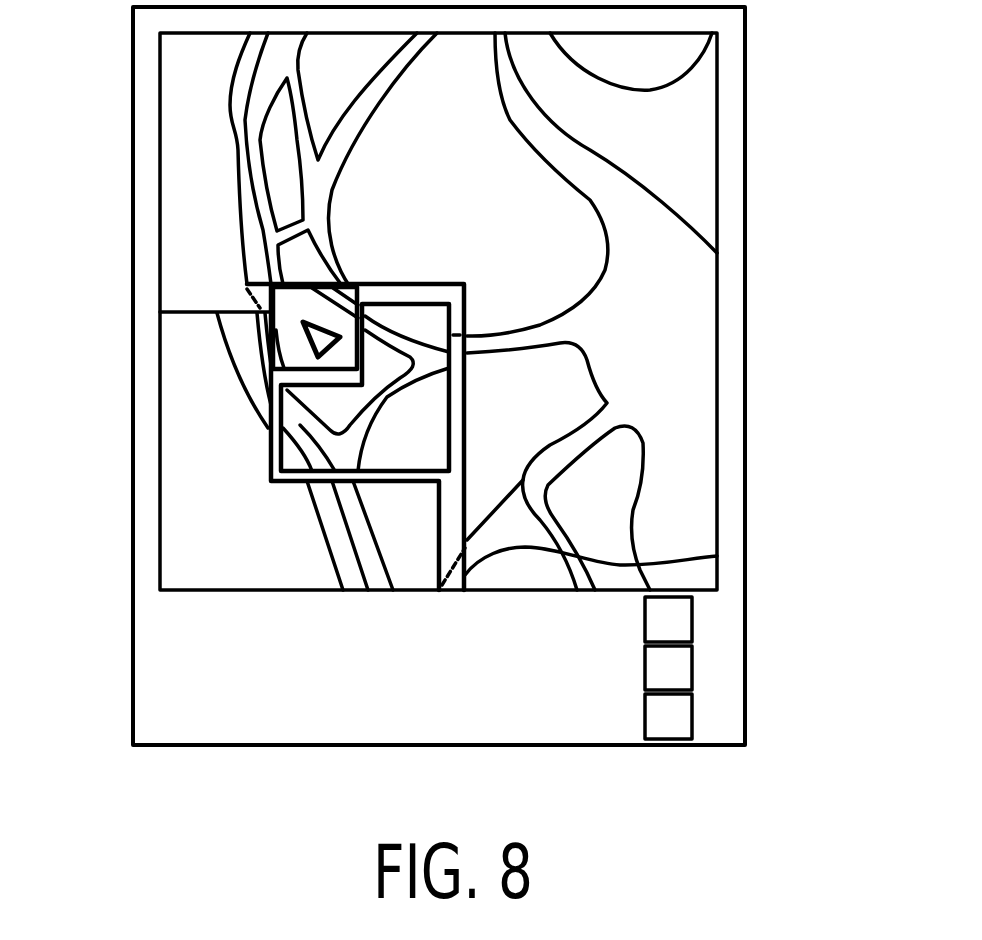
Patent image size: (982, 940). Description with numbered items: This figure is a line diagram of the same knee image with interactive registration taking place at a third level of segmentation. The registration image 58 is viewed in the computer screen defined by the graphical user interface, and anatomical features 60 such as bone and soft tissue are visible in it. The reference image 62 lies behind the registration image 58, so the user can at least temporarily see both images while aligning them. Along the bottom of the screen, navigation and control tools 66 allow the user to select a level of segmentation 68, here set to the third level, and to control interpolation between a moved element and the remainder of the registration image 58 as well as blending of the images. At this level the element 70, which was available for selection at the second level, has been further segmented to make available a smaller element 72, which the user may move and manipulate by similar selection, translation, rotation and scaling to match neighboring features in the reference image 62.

The registration image 58 is at (732, 145).
The anatomical features 60 is at (467, 336).
The reference image 62 is at (717, 556).
The navigation and control tools 66 is at (712, 674).
The level of segmentation 68 is at (692, 623).
The smaller element 70 is at (405, 316).
The smaller element 72 is at (285, 323).